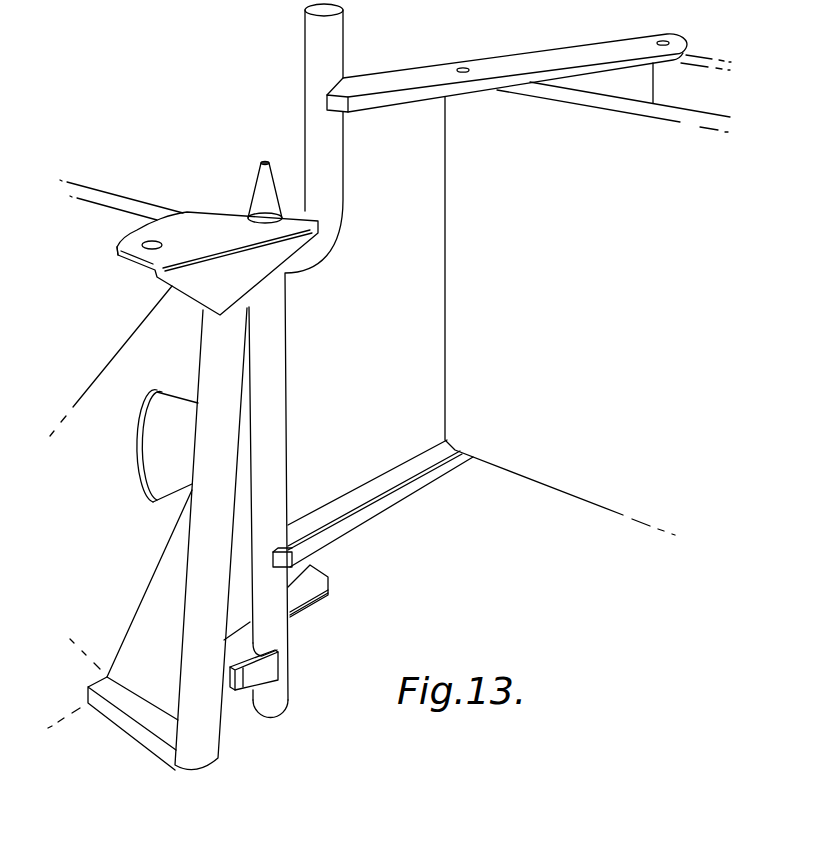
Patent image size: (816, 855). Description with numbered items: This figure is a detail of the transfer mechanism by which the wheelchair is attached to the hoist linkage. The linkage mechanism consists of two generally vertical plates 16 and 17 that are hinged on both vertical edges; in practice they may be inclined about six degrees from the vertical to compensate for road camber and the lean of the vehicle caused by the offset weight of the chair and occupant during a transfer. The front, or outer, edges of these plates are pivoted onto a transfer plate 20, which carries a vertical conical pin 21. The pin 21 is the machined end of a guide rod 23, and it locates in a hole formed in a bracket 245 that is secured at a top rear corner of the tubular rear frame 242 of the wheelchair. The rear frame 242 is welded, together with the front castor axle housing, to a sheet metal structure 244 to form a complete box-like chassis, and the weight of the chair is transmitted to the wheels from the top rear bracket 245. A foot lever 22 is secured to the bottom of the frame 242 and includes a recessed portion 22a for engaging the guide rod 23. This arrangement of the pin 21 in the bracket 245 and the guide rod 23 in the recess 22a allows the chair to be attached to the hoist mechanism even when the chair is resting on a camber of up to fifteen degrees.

The vertical plate 16 is at (540, 237).
The vertical plate 17 is at (705, 103).
The transfer plate 20 is at (519, 58).
The conical pin 21 is at (260, 174).
The foot lever 22 is at (305, 613).
The recessed portion 22a is at (243, 688).
The guide rod 23 is at (280, 422).
The tubular rear frame 242 is at (202, 758).
The sheet metal structure 244 is at (152, 208).
The bracket 245 is at (220, 218).